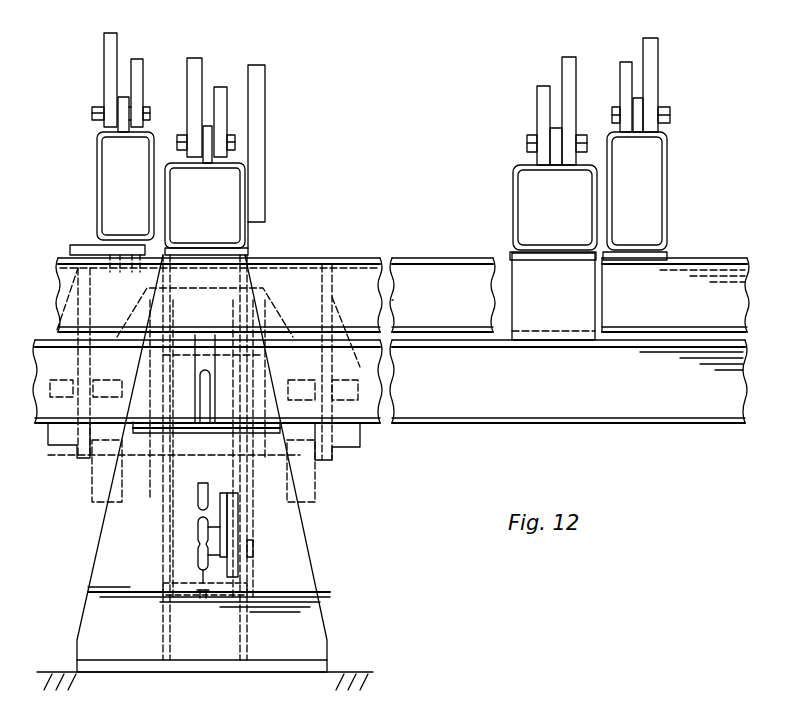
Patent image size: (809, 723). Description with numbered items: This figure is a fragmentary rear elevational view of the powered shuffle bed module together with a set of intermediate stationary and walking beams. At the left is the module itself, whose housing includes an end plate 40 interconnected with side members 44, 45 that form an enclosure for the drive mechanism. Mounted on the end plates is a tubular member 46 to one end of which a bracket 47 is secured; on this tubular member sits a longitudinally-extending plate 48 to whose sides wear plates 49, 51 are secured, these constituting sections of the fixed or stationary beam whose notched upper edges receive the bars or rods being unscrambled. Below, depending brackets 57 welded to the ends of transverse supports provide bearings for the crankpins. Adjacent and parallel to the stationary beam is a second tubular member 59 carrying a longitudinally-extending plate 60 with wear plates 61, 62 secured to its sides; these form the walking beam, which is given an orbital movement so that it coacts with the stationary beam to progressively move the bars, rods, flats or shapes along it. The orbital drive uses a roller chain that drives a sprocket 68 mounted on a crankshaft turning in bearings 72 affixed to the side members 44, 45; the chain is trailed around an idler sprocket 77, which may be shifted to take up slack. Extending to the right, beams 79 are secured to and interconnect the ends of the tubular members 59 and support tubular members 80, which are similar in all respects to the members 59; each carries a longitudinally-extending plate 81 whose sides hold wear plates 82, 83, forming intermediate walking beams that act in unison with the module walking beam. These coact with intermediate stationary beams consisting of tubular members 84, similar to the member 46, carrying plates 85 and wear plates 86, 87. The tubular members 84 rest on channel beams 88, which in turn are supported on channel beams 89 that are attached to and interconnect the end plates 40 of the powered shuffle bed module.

The end plate 40 is at (298, 548).
The side member 44 is at (247, 569).
The side member 45 is at (163, 559).
The tubular member 46 is at (248, 240).
The bracket 47 is at (265, 137).
The longitudinally-extending plate 48 is at (206, 125).
The wear plate 49 is at (220, 93).
The wear plate 51 is at (193, 72).
The depending bracket 57 is at (77, 458).
The second tubular member 59 is at (97, 210).
The longitudinally-extending plate 60 is at (121, 97).
The wear plate 61 is at (110, 50).
The wear plate 62 is at (145, 90).
The sprocket 68 is at (198, 505).
The bearing 72 is at (135, 470).
The idler sprocket 77 is at (203, 597).
The beam 79 is at (375, 258).
The tubular member 80 is at (667, 228).
The longitudinally-extending plate 81 is at (637, 98).
The wear plate 82 is at (658, 65).
The wear plate 83 is at (622, 70).
The tubular member 84 is at (513, 240).
The plate 85 is at (556, 128).
The wear plate 86 is at (543, 86).
The wear plate 87 is at (572, 57).
The channel beam 88 is at (583, 312).
The channel beam 89 is at (632, 402).